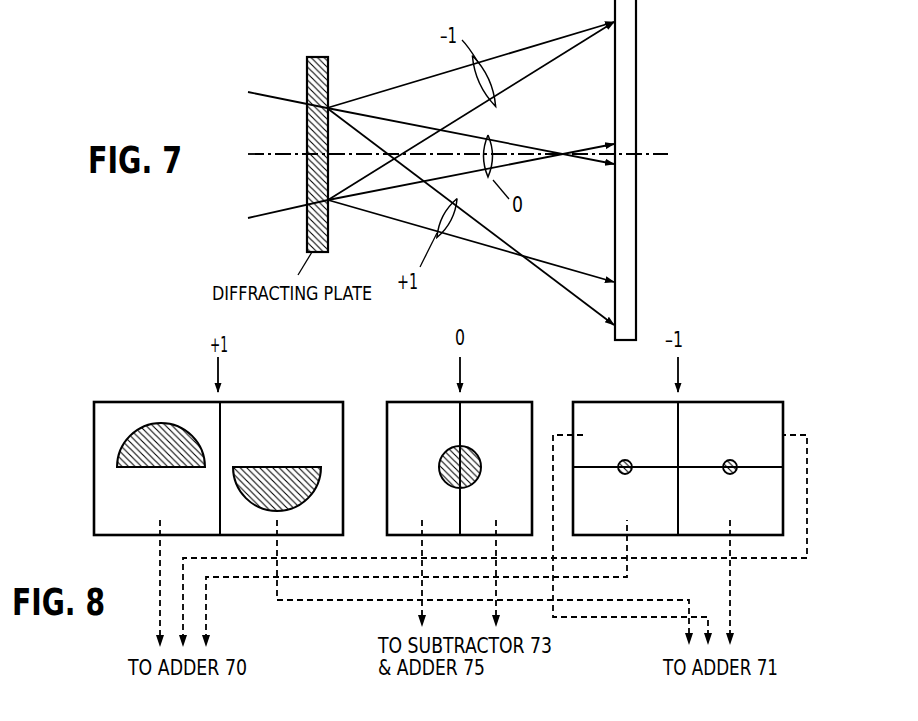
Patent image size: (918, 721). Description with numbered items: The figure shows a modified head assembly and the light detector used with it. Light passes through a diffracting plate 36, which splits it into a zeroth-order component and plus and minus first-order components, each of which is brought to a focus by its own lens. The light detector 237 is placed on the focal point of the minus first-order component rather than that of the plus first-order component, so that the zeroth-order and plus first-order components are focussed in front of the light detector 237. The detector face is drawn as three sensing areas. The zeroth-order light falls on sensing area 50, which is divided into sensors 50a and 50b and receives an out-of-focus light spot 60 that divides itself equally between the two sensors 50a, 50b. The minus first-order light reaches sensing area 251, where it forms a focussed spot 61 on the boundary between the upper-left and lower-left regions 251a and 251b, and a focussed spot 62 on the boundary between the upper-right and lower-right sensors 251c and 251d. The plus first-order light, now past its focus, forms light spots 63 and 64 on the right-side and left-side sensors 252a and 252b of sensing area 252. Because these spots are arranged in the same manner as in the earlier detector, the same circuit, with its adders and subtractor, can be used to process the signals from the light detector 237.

In FIG. 7, the diffracting plate 36 is at (307, 92).
In FIG. 7, the light detector 237 is at (636, 61).
In FIG. 8, the light detector 237 is at (764, 356).
In FIG. 8, the sensing area 252 is at (259, 396).
In FIG. 8, the right-side sensor 252a is at (323, 451).
In FIG. 8, the left-side sensor 252b is at (150, 512).
In FIG. 8, the light spot 63 is at (258, 470).
In FIG. 8, the light spot 64 is at (183, 468).
In FIG. 8, the sensing area 50 is at (479, 396).
In FIG. 8, the sensor 50a is at (440, 512).
In FIG. 8, the sensor 50b is at (513, 512).
In FIG. 8, the out-of-focus light spot 60 is at (440, 465).
In FIG. 8, the sensing area 251 is at (715, 394).
In FIG. 8, the upper-left sensor 251a is at (637, 434).
In FIG. 8, the lower-left sensor 251b is at (647, 512).
In FIG. 8, the upper-right sensor 251c is at (732, 434).
In FIG. 8, the lower-right sensor 251d is at (752, 512).
In FIG. 8, the focussed light spot 61 is at (631, 461).
In FIG. 8, the focussed light spot 62 is at (736, 461).